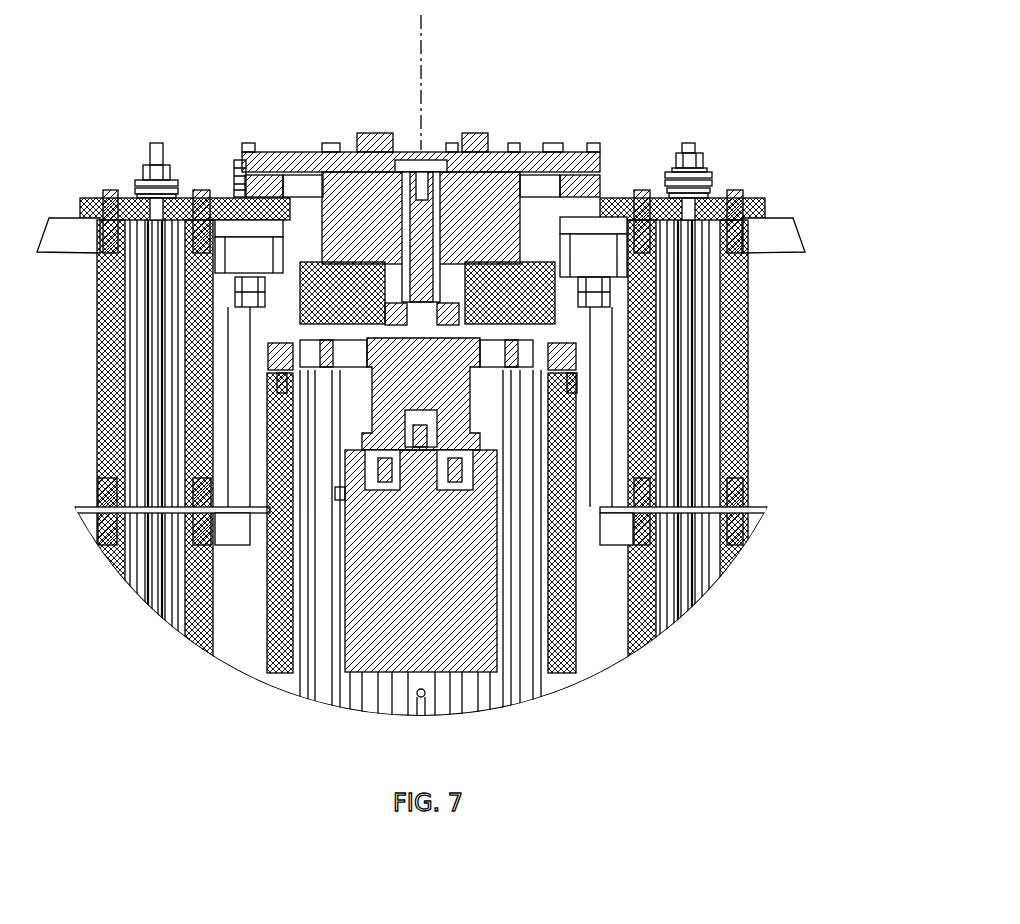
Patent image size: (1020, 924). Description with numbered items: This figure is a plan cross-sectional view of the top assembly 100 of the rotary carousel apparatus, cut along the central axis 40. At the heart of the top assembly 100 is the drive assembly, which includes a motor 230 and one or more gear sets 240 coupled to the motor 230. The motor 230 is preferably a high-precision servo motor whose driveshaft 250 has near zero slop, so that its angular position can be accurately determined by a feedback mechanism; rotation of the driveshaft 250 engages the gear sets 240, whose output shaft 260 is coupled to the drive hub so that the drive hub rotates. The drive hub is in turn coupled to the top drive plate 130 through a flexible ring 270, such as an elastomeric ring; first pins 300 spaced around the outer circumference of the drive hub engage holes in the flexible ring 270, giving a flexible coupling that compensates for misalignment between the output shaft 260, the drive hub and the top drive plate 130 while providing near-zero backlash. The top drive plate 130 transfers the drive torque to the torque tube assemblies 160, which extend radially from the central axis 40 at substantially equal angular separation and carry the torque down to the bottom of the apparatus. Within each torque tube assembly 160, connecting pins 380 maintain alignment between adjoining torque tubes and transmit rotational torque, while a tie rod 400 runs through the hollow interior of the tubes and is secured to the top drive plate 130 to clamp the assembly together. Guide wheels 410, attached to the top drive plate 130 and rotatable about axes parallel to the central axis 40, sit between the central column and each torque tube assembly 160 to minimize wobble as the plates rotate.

The top assembly 100 is at (608, 38).
The central axis 40 is at (419, 116).
The top drive plate 130 is at (757, 197).
The torque tube assembly 160 is at (100, 372).
The motor 230 is at (343, 672).
The gear set 240 is at (427, 311).
The driveshaft 250 is at (430, 449).
The output shaft 260 is at (422, 197).
The flexible ring 270 is at (240, 157).
The first pin 300 is at (268, 150).
The connecting pin 380 is at (100, 478).
The tie rod 400 is at (155, 600).
The guide wheel 410 is at (604, 250).